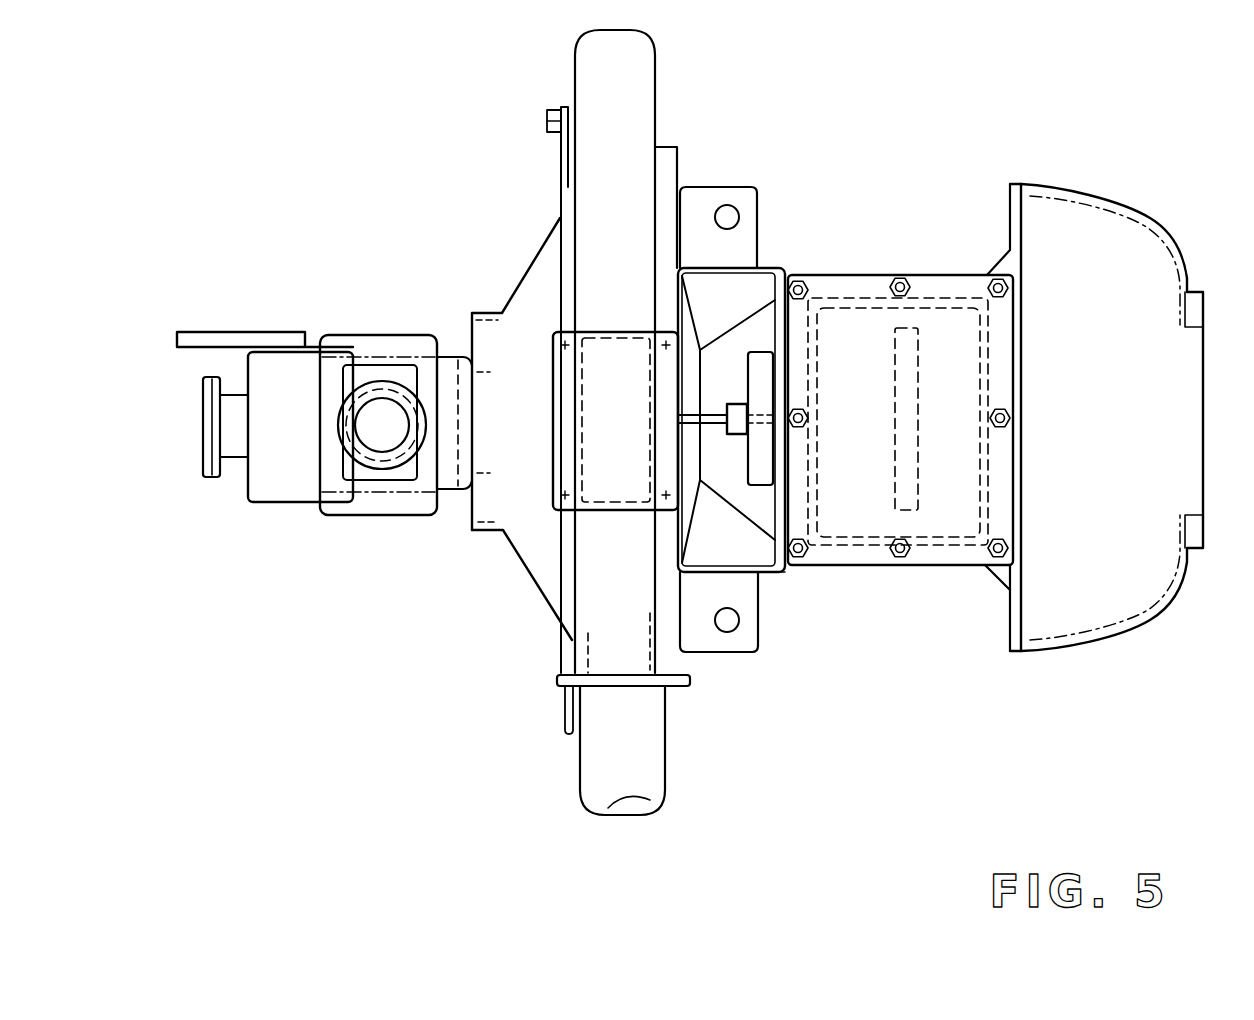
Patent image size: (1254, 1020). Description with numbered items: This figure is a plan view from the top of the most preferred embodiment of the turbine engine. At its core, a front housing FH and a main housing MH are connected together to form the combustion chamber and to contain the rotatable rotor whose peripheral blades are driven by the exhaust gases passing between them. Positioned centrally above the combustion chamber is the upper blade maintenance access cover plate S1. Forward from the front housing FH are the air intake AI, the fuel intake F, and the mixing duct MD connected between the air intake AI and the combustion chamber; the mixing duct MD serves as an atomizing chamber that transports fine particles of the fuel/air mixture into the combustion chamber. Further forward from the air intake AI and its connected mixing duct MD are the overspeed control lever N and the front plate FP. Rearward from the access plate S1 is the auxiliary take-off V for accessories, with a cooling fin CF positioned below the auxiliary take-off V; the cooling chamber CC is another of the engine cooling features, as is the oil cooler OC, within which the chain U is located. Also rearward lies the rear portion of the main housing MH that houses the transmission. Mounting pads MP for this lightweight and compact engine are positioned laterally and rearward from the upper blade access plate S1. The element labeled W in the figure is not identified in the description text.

The wire tube W is at (650, 753).
The upper blade maintenance access cover plate S1 is at (617, 507).
The cooling fin CF is at (705, 413).
The cooling chamber CC is at (732, 290).
The mounting pads MP is at (742, 643).
The main housing MH is at (767, 573).
The auxiliary take-off V is at (758, 368).
The front housing FH is at (547, 280).
The mixing duct MD is at (448, 470).
The fuel intake F is at (377, 417).
The air intake AI is at (389, 467).
The overspeed control lever N is at (220, 340).
The front plate FP is at (203, 450).
The oil cooler OC is at (945, 513).
The chain U is at (907, 342).